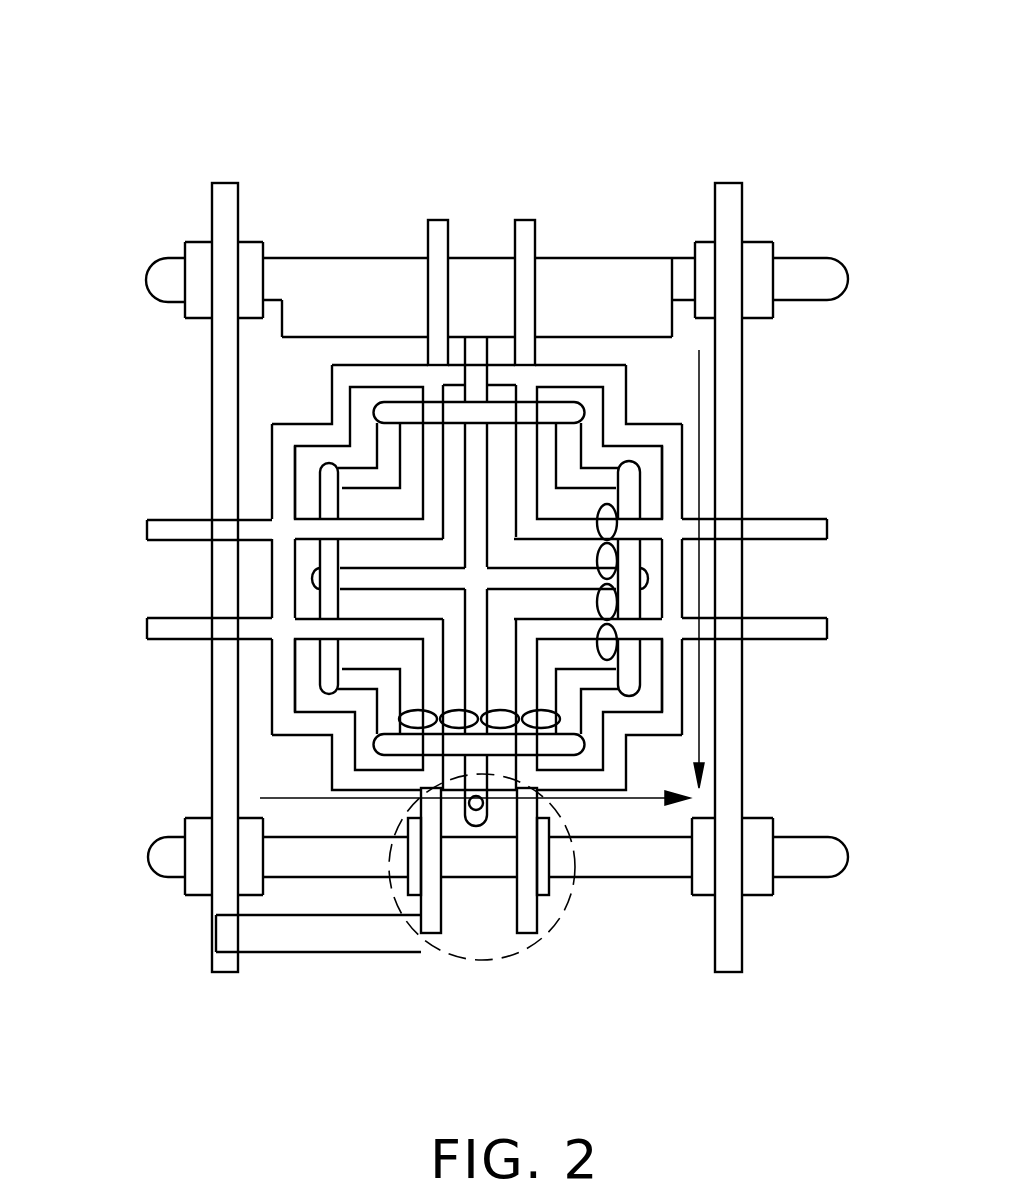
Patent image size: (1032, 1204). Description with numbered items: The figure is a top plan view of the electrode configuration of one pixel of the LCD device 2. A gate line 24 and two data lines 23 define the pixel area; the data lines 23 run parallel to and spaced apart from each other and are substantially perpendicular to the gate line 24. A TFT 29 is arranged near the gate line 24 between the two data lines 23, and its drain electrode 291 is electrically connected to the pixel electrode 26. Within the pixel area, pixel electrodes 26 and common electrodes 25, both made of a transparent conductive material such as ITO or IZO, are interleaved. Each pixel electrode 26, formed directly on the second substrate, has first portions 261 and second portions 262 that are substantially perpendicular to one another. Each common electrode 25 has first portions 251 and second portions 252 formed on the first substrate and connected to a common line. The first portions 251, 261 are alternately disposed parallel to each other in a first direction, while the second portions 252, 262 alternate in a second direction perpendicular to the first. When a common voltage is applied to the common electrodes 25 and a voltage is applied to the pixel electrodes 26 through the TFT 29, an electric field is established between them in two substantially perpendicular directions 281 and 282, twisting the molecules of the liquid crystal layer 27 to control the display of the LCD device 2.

The LCD device 2 is at (393, 48).
The data lines 23 is at (228, 198).
The gate line 24 is at (818, 858).
The common electrodes 25 is at (803, 278).
The first portions of common electrode 251 is at (363, 377).
The second portions of common electrode 252 is at (283, 700).
The pixel electrodes 26 is at (470, 915).
The first portions of pixel electrode 261 is at (553, 580).
The second portions of pixel electrode 262 is at (484, 657).
The liquid crystal layer 27 is at (610, 562).
The first electric field direction 281 is at (703, 692).
The second electric field direction 282 is at (628, 800).
The TFT 29 is at (560, 923).
The drain electrode 291 is at (452, 828).